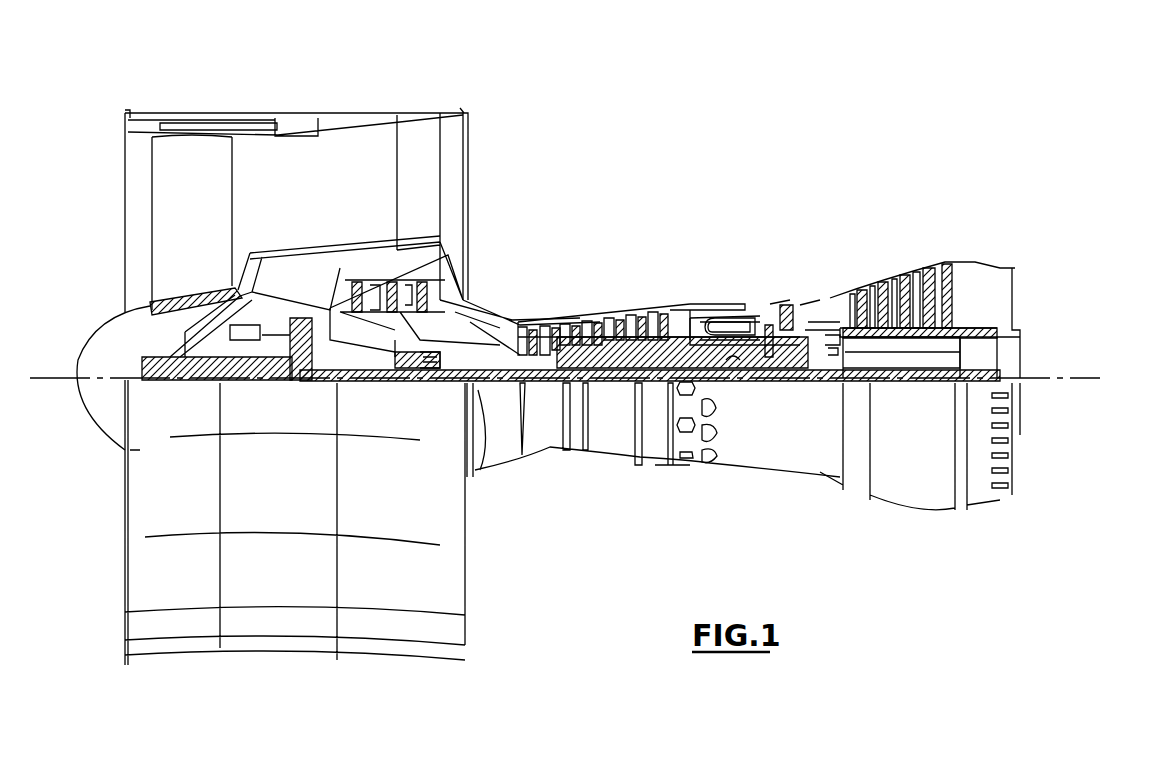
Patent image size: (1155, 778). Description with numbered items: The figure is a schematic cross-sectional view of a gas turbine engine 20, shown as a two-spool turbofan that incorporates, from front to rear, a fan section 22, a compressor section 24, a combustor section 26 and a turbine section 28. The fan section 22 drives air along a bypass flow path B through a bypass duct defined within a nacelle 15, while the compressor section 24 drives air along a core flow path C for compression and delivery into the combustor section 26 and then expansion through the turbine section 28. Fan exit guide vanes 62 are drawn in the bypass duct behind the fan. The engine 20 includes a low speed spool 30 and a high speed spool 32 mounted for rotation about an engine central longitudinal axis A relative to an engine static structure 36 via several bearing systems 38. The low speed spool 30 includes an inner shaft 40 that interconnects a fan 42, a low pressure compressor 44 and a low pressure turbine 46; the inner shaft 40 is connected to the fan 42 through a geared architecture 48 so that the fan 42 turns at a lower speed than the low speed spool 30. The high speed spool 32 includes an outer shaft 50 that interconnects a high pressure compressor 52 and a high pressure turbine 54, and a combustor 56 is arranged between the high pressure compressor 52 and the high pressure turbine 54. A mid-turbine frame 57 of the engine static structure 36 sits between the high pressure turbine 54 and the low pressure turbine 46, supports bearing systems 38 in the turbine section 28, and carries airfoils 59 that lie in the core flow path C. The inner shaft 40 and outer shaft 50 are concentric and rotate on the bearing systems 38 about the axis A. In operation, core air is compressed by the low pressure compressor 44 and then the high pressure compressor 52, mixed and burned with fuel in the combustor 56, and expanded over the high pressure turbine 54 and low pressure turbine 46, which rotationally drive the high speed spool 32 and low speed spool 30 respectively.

The nacelle 15 is at (297, 120).
The gas turbine engine 20 is at (730, 162).
The fan section 22 is at (232, 108).
The compressor section 24 is at (510, 300).
The combustor section 26 is at (724, 282).
The turbine section 28 is at (858, 250).
The low speed spool 30 is at (614, 384).
The high speed spool 32 is at (658, 338).
The engine static structure 36 is at (651, 462).
The bearing systems 38 is at (426, 377).
The inner shaft 40 is at (490, 385).
The fan 42 is at (210, 236).
The low pressure compressor 44 is at (397, 295).
The low pressure turbine 46 is at (905, 275).
The geared architecture 48 is at (300, 370).
The outer shaft 50 is at (731, 372).
The high pressure compressor 52 is at (592, 352).
The high pressure turbine 54 is at (788, 304).
The combustor 56 is at (722, 325).
The mid-turbine frame 57 is at (825, 292).
The airfoils 59 is at (822, 330).
The fan exit guide vanes 62 is at (428, 163).
The engine central longitudinal axis A is at (1100, 378).
The bypass flow path B is at (266, 185).
The core flow path C is at (300, 287).